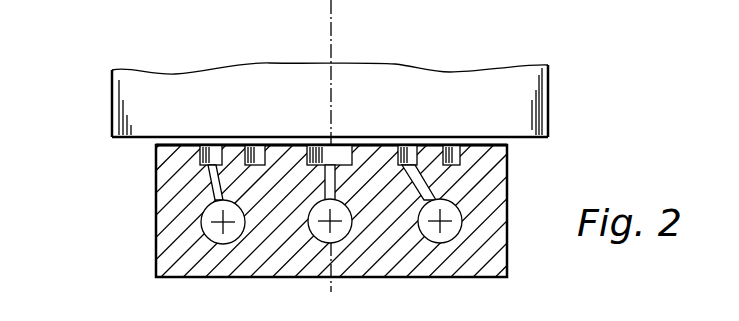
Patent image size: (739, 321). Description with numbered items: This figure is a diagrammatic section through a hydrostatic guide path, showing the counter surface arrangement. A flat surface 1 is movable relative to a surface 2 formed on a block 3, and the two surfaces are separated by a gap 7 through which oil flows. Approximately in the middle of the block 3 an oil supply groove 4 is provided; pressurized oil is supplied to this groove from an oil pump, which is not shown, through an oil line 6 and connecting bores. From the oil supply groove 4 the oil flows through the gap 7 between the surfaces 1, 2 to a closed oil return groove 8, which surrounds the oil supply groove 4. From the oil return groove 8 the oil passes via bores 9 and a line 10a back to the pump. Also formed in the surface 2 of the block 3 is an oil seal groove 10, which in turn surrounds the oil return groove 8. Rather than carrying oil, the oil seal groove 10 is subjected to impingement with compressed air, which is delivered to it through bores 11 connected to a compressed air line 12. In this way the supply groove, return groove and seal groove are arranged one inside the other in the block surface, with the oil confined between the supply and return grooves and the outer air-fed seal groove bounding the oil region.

The flat surface 1 is at (200, 145).
The surface 2 is at (156, 162).
The block 3 is at (288, 252).
The oil supply groove 4 is at (343, 157).
The oil line 6 is at (336, 225).
The gap 7 is at (294, 146).
The oil return groove 8 is at (257, 155).
The bores 9 is at (413, 183).
The oil seal groove 10 is at (453, 157).
The line 10a is at (441, 228).
The bores 11 is at (205, 188).
The compressed air line 12 is at (212, 228).